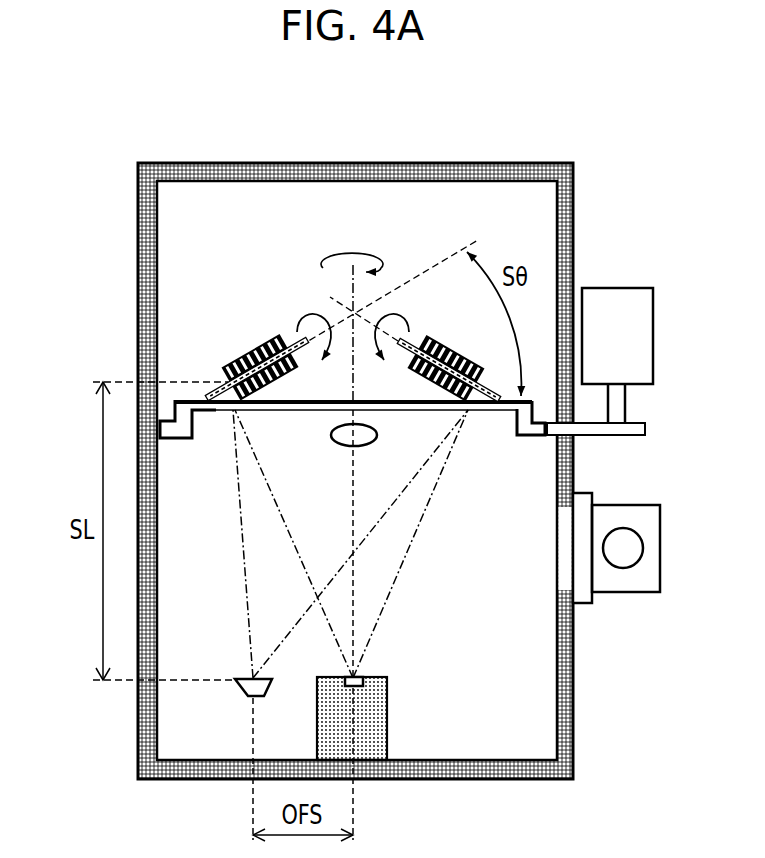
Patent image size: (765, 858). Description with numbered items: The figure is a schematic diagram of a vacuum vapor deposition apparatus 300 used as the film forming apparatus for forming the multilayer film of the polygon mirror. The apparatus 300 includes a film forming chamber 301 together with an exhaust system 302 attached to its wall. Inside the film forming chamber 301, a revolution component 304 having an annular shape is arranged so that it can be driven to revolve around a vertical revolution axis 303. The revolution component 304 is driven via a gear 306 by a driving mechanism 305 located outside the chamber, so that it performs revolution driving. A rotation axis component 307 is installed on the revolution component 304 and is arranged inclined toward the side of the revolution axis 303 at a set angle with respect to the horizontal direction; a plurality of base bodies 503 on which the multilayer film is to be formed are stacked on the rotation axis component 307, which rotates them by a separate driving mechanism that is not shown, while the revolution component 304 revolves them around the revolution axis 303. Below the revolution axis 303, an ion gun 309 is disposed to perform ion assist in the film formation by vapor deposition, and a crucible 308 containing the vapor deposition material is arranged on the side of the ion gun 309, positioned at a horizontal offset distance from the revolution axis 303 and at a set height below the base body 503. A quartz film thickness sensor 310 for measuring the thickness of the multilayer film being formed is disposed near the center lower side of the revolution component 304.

The vacuum vapor deposition apparatus 300 is at (100, 158).
The film forming chamber 301 is at (279, 170).
The exhaust system 302 is at (620, 583).
The revolution axis 303 is at (345, 293).
The revolution component 304 is at (182, 432).
The driving mechanism 305 is at (620, 292).
The gear 306 is at (578, 435).
The rotation axis component 307 is at (297, 345).
The crucible 308 is at (247, 687).
The ion gun 309 is at (382, 718).
The quartz film thickness sensor 310 is at (343, 447).
The base body 503 is at (452, 352).